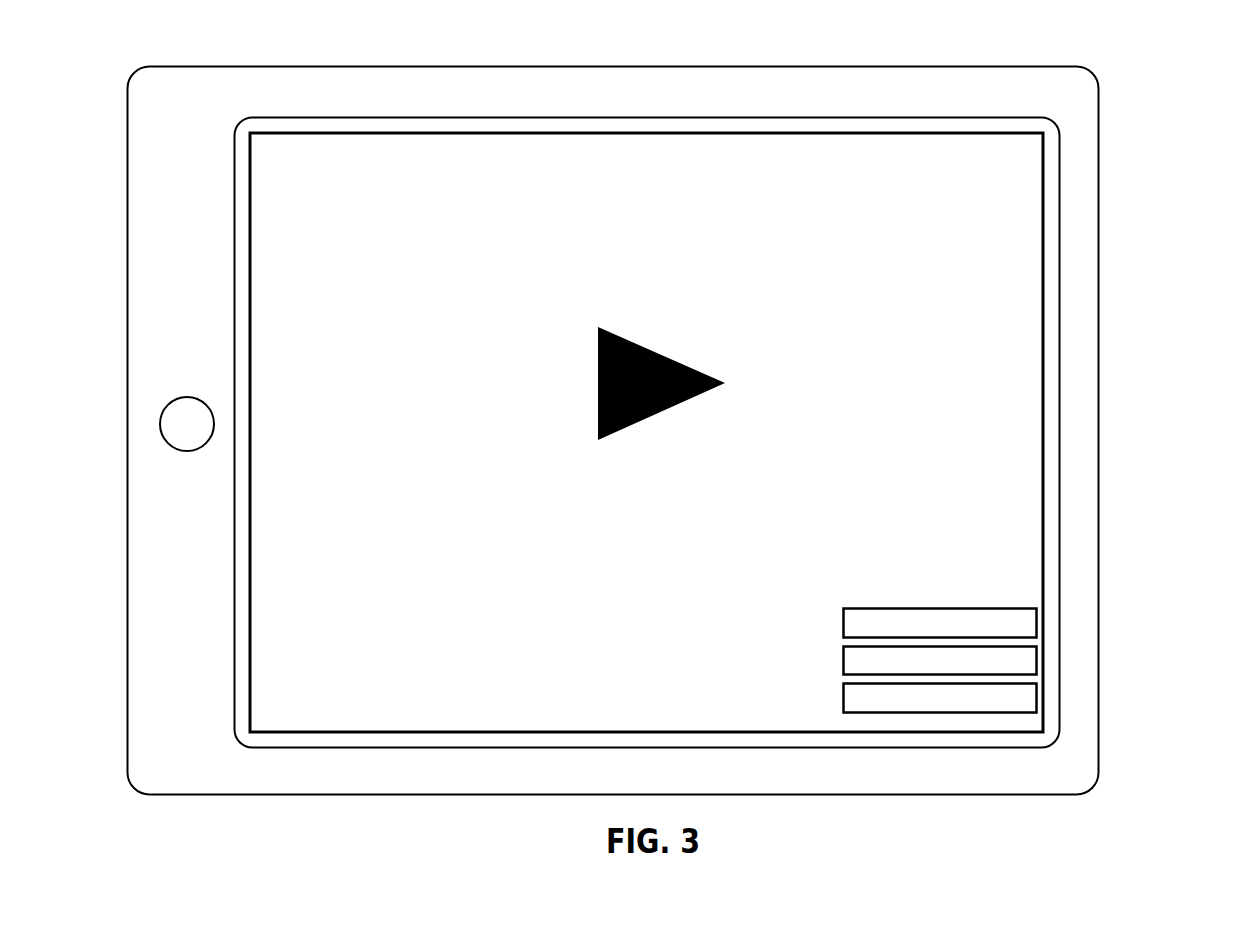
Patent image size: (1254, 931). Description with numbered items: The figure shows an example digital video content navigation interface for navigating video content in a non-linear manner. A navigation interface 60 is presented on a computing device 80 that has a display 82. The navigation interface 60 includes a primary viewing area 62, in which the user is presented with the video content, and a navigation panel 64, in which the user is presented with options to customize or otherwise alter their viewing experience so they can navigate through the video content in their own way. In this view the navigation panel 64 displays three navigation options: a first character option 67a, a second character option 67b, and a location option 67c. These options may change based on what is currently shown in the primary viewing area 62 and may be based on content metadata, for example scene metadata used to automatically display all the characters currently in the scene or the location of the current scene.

The navigation interface 60 is at (1074, 113).
The computing device 80 is at (1164, 303).
The display 82 is at (1061, 432).
The primary viewing area 62 is at (661, 420).
The navigation panel 64 is at (925, 715).
The Character 1 option 67a is at (1038, 613).
The Character 2 option 67b is at (1038, 661).
The Location option 67c is at (1038, 699).